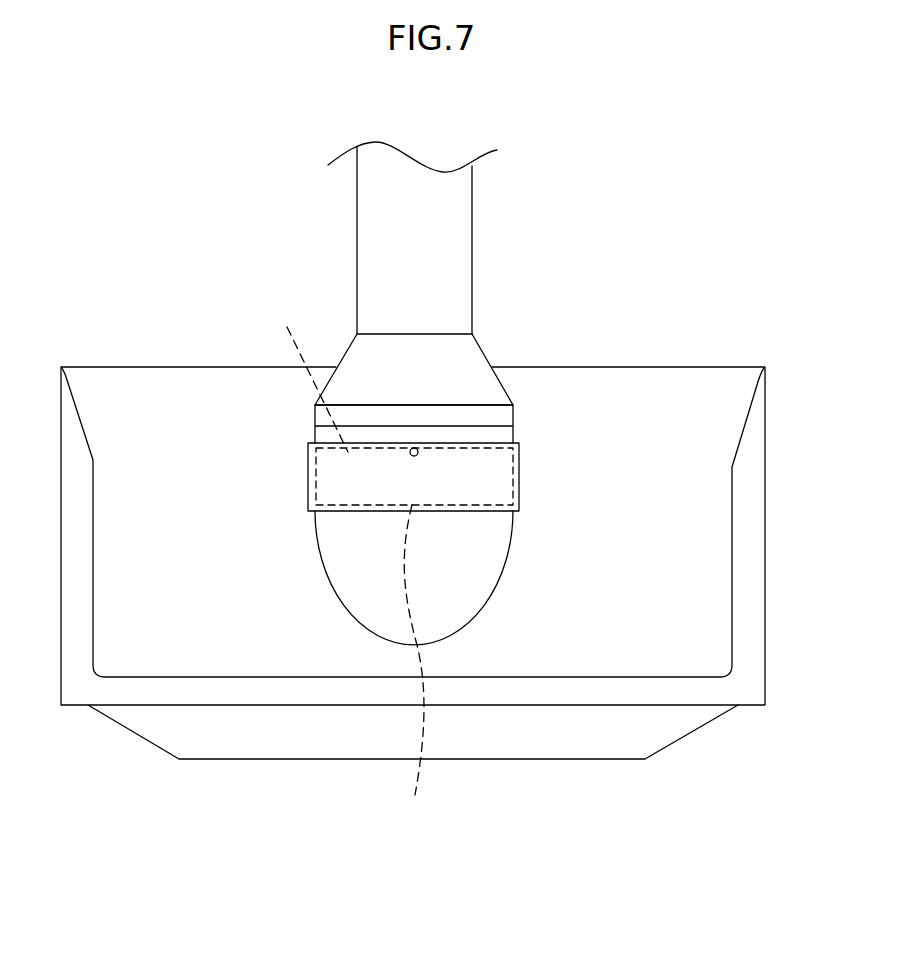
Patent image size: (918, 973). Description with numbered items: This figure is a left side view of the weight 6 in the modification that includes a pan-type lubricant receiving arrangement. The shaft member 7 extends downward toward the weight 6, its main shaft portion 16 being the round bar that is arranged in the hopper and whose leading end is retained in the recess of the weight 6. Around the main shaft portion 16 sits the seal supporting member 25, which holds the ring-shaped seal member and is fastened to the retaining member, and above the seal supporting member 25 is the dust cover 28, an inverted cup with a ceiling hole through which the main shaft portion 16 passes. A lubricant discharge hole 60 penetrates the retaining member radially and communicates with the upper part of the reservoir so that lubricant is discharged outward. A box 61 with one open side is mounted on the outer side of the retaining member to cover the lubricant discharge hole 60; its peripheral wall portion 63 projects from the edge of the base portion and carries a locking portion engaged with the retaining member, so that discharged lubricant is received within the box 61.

The weight 6 is at (765, 600).
The shaft member 7 is at (485, 196).
The main shaft portion 16 is at (452, 258).
The dust cover 28 is at (470, 363).
The seal supporting member 25 is at (510, 436).
The lubricant discharge hole 60 is at (415, 449).
The box 61 is at (536, 500).
The peripheral wall portion 63 is at (349, 561).